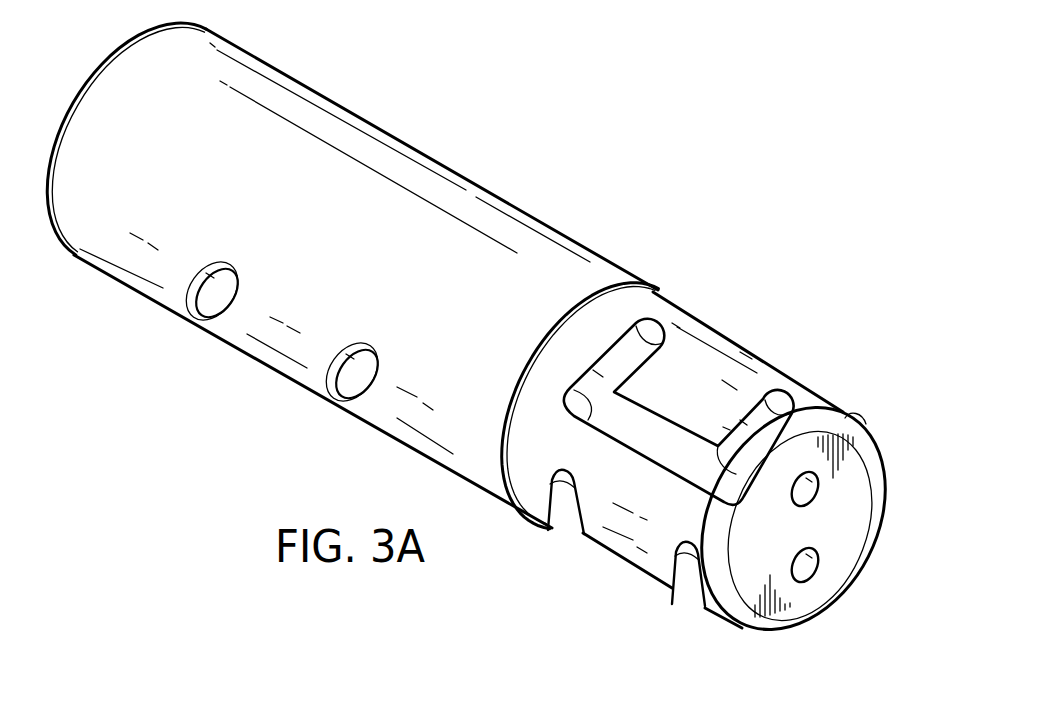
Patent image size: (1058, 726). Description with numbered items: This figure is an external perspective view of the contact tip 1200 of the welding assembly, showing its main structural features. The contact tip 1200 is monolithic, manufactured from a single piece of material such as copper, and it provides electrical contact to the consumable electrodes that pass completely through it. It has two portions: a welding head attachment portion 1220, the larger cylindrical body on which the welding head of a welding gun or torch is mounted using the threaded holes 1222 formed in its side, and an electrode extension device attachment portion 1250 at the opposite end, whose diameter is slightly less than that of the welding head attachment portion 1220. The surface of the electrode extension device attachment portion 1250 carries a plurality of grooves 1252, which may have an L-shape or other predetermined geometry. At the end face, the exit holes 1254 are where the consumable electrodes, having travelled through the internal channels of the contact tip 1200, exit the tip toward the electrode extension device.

The contact tip 1200 is at (551, 58).
The welding head attachment portion 1220 is at (468, 195).
The threaded holes 1222 is at (222, 299).
The electrode extension device attachment portion 1250 is at (733, 355).
The grooves 1252 is at (653, 330).
The exit holes 1254 is at (817, 493).